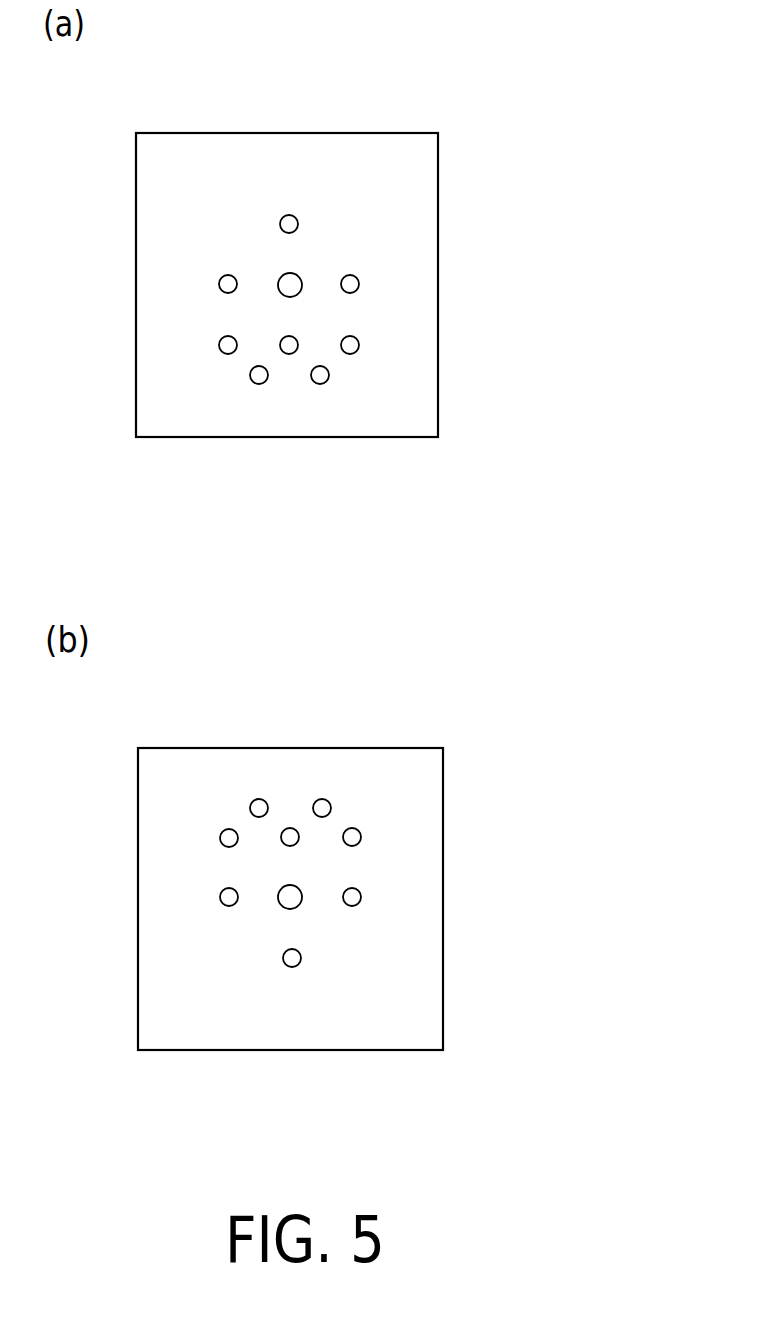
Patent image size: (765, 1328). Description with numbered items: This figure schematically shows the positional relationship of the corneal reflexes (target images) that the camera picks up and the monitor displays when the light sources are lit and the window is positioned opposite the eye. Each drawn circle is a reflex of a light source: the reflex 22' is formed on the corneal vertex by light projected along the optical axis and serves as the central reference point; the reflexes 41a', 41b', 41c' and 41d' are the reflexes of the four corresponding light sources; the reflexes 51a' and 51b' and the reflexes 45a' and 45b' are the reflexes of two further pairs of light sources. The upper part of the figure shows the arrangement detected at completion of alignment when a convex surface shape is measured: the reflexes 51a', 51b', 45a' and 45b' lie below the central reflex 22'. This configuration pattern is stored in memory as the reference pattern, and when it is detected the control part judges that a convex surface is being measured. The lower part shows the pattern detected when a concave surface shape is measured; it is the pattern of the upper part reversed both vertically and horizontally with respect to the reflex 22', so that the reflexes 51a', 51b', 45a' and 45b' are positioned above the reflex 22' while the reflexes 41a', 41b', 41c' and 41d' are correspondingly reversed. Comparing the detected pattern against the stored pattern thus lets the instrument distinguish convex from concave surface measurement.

The reflex 22' is at (298, 594).
The reflex 41a' is at (294, 586).
The reflex 41b' is at (288, 586).
The reflex 41c' is at (301, 596).
The reflex 41d' is at (294, 591).
The reflex 45a' is at (291, 591).
The reflex 45b' is at (294, 591).
The reflex 51a' is at (295, 588).
The reflex 51b' is at (288, 589).